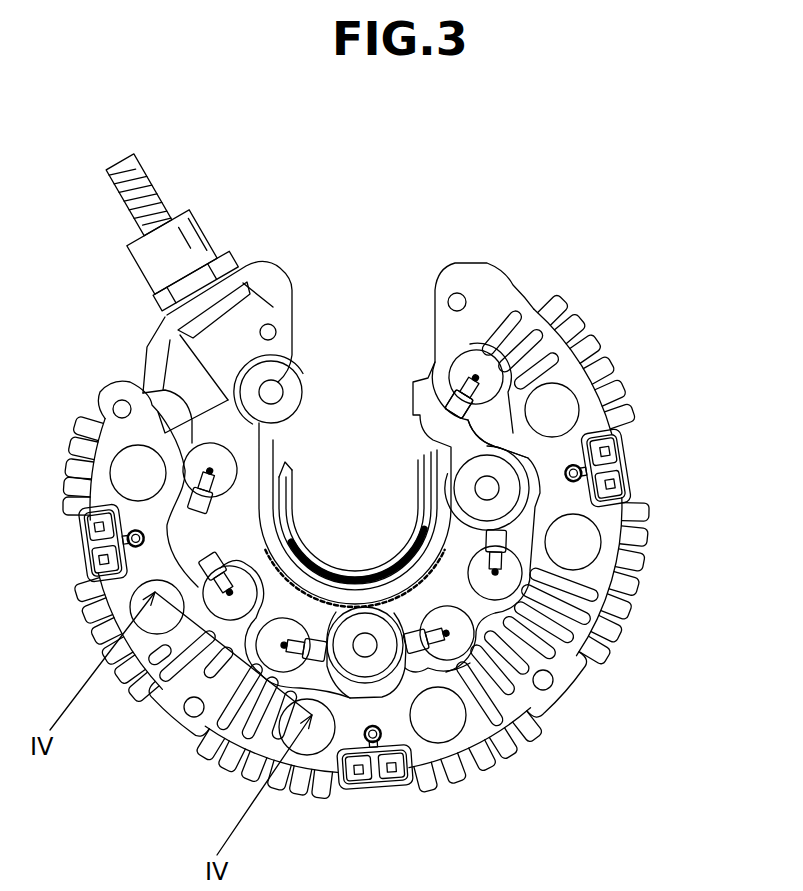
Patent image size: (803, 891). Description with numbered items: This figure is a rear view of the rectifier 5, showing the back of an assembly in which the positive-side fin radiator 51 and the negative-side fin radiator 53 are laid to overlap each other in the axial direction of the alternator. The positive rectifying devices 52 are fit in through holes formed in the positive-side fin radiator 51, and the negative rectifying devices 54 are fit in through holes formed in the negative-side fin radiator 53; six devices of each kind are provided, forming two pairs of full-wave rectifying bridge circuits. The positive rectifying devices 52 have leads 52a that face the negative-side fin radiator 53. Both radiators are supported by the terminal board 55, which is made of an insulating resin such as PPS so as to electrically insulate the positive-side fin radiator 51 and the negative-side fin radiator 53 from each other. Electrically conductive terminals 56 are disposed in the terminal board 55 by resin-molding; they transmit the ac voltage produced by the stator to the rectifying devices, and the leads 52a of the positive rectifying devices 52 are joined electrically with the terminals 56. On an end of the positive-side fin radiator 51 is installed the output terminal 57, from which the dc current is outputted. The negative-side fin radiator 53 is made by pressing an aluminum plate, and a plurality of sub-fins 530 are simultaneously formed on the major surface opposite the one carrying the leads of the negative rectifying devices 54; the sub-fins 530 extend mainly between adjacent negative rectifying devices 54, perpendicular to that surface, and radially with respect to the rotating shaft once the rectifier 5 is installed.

The rectifier 5 is at (362, 258).
The positive-side fin radiator 51 is at (490, 422).
The positive rectifying devices 52 is at (487, 367).
The leads 52a is at (477, 370).
The negative-side fin radiator 53 is at (543, 698).
The sub-fins 530 is at (207, 740).
The negative rectifying devices 54 is at (578, 550).
The terminal board 55 is at (527, 487).
The terminals 56 is at (435, 637).
The output terminal 57 is at (147, 173).